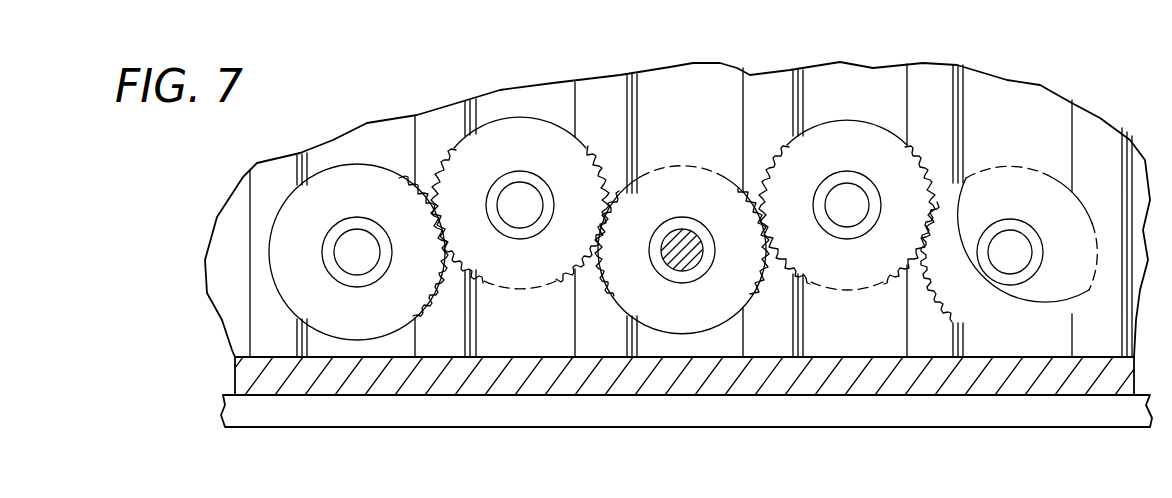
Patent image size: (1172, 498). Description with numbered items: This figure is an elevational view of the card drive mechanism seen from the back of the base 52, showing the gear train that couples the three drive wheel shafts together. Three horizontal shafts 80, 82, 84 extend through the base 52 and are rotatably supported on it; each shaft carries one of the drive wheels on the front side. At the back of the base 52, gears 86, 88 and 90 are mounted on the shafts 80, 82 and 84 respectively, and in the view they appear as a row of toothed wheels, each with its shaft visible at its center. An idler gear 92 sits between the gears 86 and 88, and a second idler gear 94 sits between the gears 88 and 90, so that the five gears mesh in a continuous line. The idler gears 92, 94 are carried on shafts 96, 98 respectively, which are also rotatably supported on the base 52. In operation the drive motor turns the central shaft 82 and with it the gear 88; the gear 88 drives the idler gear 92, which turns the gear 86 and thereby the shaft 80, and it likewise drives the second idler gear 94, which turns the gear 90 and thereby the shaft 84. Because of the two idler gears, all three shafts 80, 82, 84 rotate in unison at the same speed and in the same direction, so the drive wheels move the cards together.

The base 52 is at (1020, 88).
The shaft 80 is at (361, 258).
The shaft 82 is at (683, 262).
The shaft 84 is at (1022, 255).
The gear 86 is at (270, 255).
The gear 88 is at (683, 172).
The gear 90 is at (1023, 173).
The idler gear 92 is at (523, 122).
The second idler gear 94 is at (855, 133).
The shaft 96 is at (530, 206).
The shaft 98 is at (847, 212).